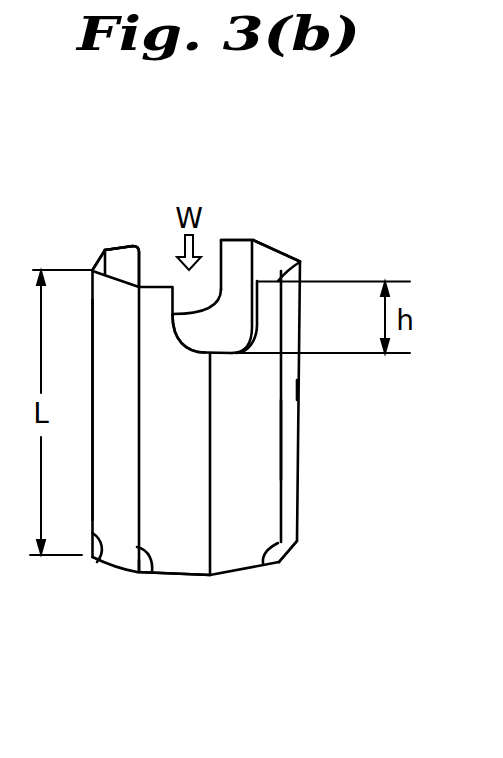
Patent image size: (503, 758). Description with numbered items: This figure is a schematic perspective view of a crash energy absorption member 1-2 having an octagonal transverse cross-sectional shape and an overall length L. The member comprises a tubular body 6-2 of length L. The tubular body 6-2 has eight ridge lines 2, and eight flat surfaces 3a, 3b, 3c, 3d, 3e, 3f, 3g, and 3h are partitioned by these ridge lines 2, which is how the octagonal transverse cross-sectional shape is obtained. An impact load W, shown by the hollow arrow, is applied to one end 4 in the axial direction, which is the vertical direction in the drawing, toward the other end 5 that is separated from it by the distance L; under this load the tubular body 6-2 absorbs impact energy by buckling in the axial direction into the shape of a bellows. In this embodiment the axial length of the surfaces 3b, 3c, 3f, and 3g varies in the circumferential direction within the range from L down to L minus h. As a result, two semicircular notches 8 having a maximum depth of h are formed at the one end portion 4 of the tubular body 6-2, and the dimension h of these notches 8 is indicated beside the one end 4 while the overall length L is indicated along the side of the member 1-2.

The crash energy absorption member 1-2 is at (290, 221).
The ridge lines 2 is at (252, 240).
The flat surface 3a is at (123, 432).
The flat surface 3b is at (176, 545).
The flat surface 3c is at (246, 522).
The flat surface 3d is at (288, 435).
The flat surface 3e is at (278, 248).
The flat surface 3f is at (228, 240).
The flat surface 3g is at (128, 243).
The flat surface 3h is at (97, 267).
The one end 4 is at (134, 244).
The other end 5 is at (223, 576).
The tubular body 6-2 is at (298, 393).
The semicircular notches 8 is at (207, 291).